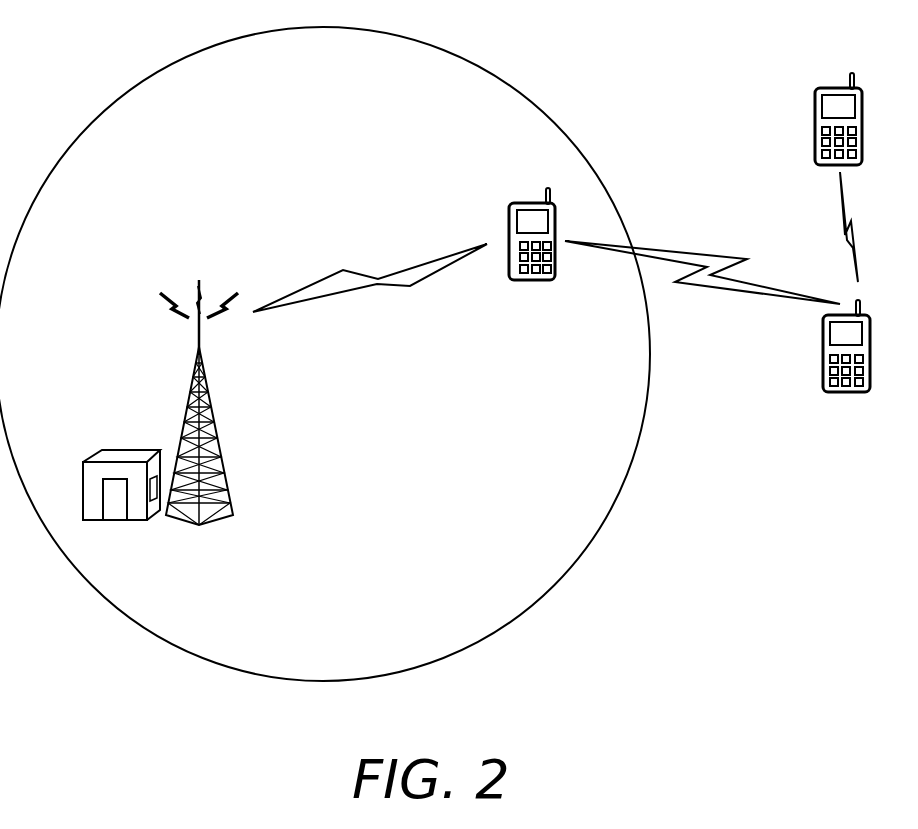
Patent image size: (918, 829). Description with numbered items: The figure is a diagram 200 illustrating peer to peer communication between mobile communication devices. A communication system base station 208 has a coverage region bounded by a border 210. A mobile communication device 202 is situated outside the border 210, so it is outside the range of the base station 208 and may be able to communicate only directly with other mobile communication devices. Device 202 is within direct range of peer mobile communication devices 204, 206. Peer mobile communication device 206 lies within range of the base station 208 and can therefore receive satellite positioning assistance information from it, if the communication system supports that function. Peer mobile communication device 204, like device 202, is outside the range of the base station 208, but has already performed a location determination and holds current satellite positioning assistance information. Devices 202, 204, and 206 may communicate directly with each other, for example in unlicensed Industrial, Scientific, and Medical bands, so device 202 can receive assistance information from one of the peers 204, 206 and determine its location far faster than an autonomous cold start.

The diagram 200 is at (558, 701).
The mobile communication device 202 is at (847, 393).
The peer mobile communication device 204 is at (815, 127).
The peer mobile communication device 206 is at (533, 281).
The communication system base station 208 is at (187, 390).
The border 210 is at (432, 45).